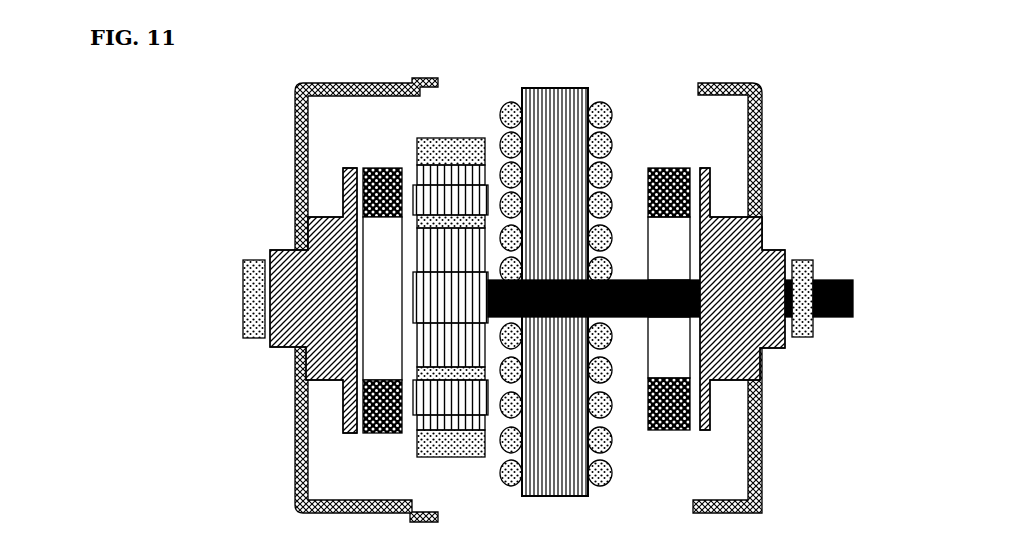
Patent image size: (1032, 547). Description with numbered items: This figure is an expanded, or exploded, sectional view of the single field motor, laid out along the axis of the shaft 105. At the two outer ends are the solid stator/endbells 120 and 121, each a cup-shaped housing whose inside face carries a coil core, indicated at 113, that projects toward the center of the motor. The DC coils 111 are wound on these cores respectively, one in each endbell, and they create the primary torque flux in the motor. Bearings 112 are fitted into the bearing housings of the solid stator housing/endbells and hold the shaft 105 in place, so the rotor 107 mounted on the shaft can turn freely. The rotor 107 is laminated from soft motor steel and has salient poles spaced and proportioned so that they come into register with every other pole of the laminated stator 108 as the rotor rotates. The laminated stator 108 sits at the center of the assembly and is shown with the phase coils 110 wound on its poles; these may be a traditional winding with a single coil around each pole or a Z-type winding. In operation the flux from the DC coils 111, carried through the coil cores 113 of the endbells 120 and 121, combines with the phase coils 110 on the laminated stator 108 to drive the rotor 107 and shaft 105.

The shaft 105 is at (835, 282).
The rotor 107 is at (472, 147).
The laminated stator 108 is at (538, 103).
The phase coils 110 is at (600, 473).
The DC coils 111 is at (383, 185).
The bearings 112 is at (247, 310).
The coil cores 113 is at (342, 282).
The solid stator/endbell 120 is at (752, 138).
The solid stator/endbell 121 is at (295, 184).